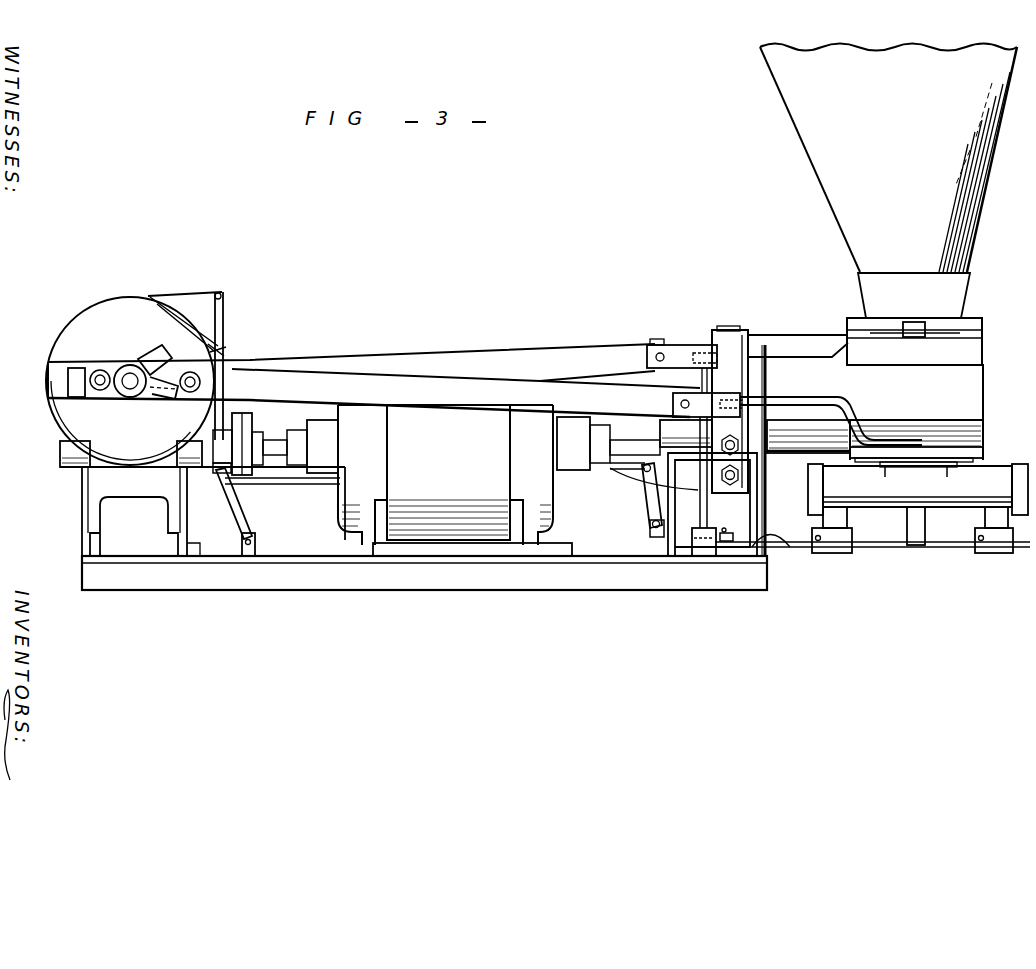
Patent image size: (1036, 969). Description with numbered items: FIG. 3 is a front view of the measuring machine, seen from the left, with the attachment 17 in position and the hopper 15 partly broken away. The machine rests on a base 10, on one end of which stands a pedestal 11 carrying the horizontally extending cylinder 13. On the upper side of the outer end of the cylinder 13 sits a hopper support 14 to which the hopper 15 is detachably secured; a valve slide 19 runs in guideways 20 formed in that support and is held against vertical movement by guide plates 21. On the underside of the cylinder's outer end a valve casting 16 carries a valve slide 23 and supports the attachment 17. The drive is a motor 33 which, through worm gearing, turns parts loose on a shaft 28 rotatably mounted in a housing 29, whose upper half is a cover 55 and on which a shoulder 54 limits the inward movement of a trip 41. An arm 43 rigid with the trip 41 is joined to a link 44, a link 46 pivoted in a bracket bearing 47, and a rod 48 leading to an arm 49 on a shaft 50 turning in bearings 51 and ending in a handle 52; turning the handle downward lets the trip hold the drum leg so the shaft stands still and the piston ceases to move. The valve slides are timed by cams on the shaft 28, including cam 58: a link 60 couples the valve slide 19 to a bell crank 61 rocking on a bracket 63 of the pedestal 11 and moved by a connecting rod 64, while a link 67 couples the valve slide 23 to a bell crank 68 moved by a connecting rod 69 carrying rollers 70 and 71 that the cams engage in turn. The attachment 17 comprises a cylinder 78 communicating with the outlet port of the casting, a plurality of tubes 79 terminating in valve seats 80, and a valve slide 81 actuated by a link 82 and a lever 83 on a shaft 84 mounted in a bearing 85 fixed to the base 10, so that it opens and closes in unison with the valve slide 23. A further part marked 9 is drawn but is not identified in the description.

The pedestal stand 9 is at (158, 397).
The base 10 is at (362, 592).
The pedestal 11 is at (773, 511).
The cylinder 13 is at (771, 336).
The hopper support 14 is at (976, 322).
The hopper 15 is at (868, 200).
The valve casting 16 is at (986, 420).
The attachment 17 is at (943, 561).
The valve slide 19 is at (856, 321).
The guideways 20 is at (966, 345).
The guide plates 21 is at (946, 323).
The valve slide 23 is at (930, 450).
The shaft 28 is at (122, 377).
The housing 29 is at (60, 346).
The motor 33 is at (420, 525).
The trip 41 is at (224, 350).
The arm 43 is at (185, 296).
The link 44 is at (226, 326).
The link 46 is at (232, 517).
The bracket bearing 47 is at (253, 553).
The rod 48 is at (634, 455).
The arm 49 is at (652, 500).
The shaft 50 is at (680, 560).
The bearings 51 is at (690, 557).
The handle 52 is at (650, 455).
The shoulder 54 is at (242, 428).
The cover 55 is at (103, 298).
The cam 58 is at (160, 348).
The link 60 is at (908, 322).
The bell crank 61 is at (790, 350).
The bracket 63 is at (752, 480).
The connecting rod 64 is at (345, 360).
The link 67 is at (915, 437).
The bell crank 68 is at (828, 398).
The connecting rod 69 is at (358, 388).
The roller 70 is at (202, 383).
The roller 71 is at (88, 383).
The cylinder 78 is at (967, 500).
The tubes 79 is at (850, 518).
The valve seats 80 is at (1000, 550).
The valve slide 81 is at (912, 522).
The link 82 is at (775, 527).
The lever 83 is at (713, 548).
The shaft 84 is at (698, 490).
The bearing 85 is at (722, 545).